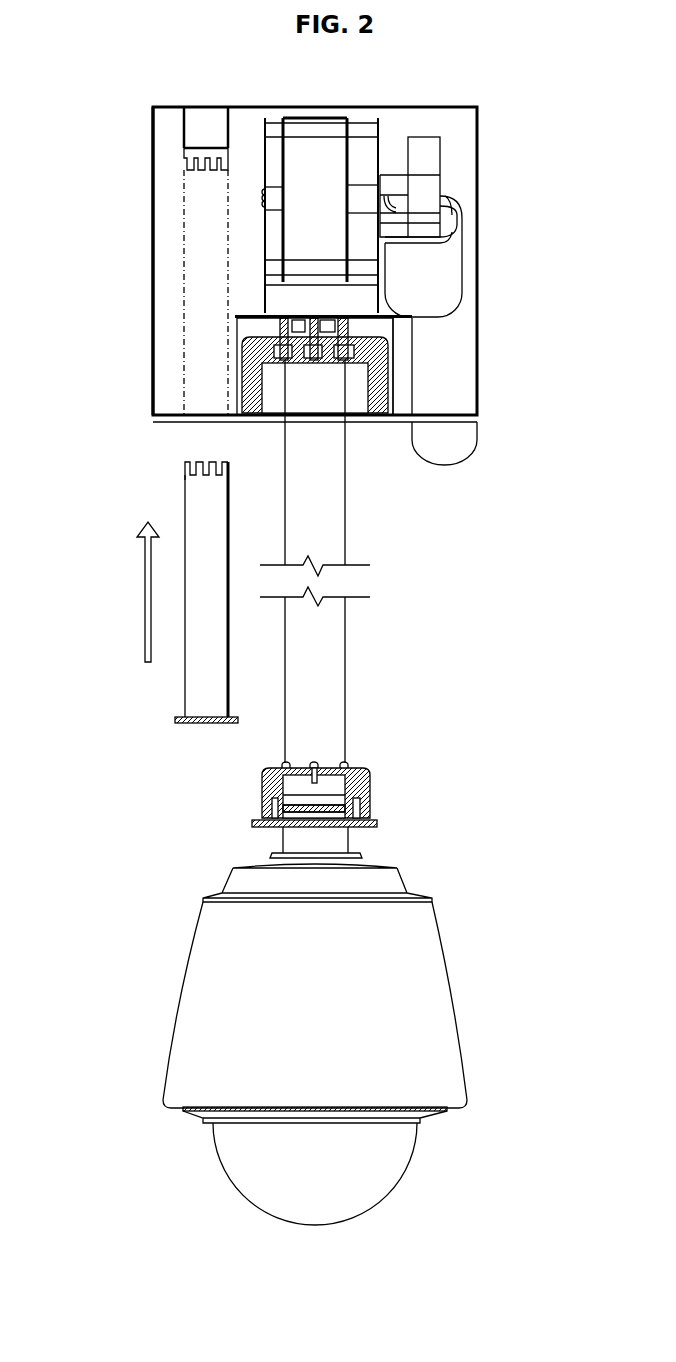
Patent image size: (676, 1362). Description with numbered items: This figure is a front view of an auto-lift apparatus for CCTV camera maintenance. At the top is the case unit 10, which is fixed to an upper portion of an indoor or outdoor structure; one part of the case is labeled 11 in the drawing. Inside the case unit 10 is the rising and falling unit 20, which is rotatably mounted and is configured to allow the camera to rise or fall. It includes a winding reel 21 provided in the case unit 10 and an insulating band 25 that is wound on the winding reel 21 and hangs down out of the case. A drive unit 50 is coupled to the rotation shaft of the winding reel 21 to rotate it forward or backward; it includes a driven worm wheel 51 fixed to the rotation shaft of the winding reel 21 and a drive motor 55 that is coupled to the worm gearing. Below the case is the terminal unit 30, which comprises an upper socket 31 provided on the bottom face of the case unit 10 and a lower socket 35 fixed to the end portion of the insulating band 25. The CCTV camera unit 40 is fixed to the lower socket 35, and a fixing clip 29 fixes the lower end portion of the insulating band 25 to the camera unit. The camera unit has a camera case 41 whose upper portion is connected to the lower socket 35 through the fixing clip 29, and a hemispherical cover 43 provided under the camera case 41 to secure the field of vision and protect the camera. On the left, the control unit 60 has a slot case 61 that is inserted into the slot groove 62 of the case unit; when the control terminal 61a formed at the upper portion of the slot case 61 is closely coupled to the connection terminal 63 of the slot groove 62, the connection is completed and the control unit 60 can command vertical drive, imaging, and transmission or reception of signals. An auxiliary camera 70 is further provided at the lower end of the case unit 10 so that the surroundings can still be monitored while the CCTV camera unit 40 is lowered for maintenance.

The case unit 10 is at (140, 136).
The housing side wall 11 is at (152, 311).
The rising and falling unit 20 is at (253, 134).
The winding reel 21 is at (378, 162).
The insulating band 25 is at (328, 538).
The fixing clip 29 is at (368, 812).
The terminal unit 30 is at (505, 602).
The upper socket 31 is at (393, 420).
The lower socket 35 is at (370, 770).
The CCTV camera unit 40 is at (314, 1026).
The camera case 41 is at (452, 1085).
The hemispherical cover 43 is at (368, 1172).
The drive unit 50 is at (448, 294).
The driven worm wheel 51 is at (422, 193).
The drive motor 55 is at (448, 260).
The control unit 60 is at (192, 579).
The slot case 61 is at (147, 580).
The control terminal 61a is at (185, 462).
The slot groove 62 is at (211, 266).
The connection terminal 63 is at (183, 160).
The auxiliary camera 70 is at (457, 437).